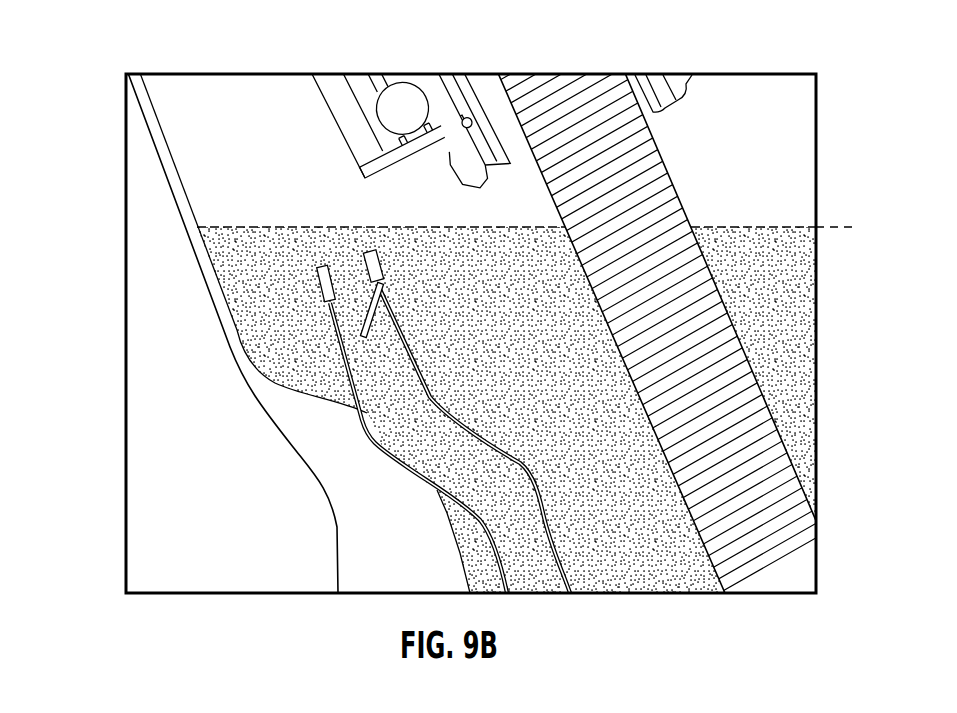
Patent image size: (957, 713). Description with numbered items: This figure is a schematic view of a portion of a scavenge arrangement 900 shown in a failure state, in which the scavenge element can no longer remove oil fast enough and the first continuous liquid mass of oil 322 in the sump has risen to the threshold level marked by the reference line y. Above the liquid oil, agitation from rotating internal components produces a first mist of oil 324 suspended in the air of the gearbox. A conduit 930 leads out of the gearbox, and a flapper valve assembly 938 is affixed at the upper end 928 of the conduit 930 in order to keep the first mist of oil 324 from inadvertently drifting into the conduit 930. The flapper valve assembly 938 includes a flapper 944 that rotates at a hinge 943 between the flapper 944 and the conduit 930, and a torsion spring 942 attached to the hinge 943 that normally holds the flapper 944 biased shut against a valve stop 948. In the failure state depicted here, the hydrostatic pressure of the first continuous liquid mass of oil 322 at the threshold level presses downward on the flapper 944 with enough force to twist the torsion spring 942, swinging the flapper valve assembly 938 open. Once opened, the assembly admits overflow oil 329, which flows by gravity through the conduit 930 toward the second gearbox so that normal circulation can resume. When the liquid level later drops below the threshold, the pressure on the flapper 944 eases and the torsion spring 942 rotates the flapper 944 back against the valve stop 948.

The scavenge arrangement 900 is at (127, 32).
The flapper valve assembly 938 is at (345, 247).
The torsion spring 942 is at (383, 279).
The hinge 943 is at (382, 288).
The flapper 944 is at (392, 321).
The valve stop 948 is at (328, 303).
The upper end 928 is at (290, 322).
The conduit 930 is at (405, 468).
The overflow oil 329 is at (531, 574).
The first continuous liquid mass of oil 322 is at (795, 303).
The first mist of oil 324 is at (795, 117).